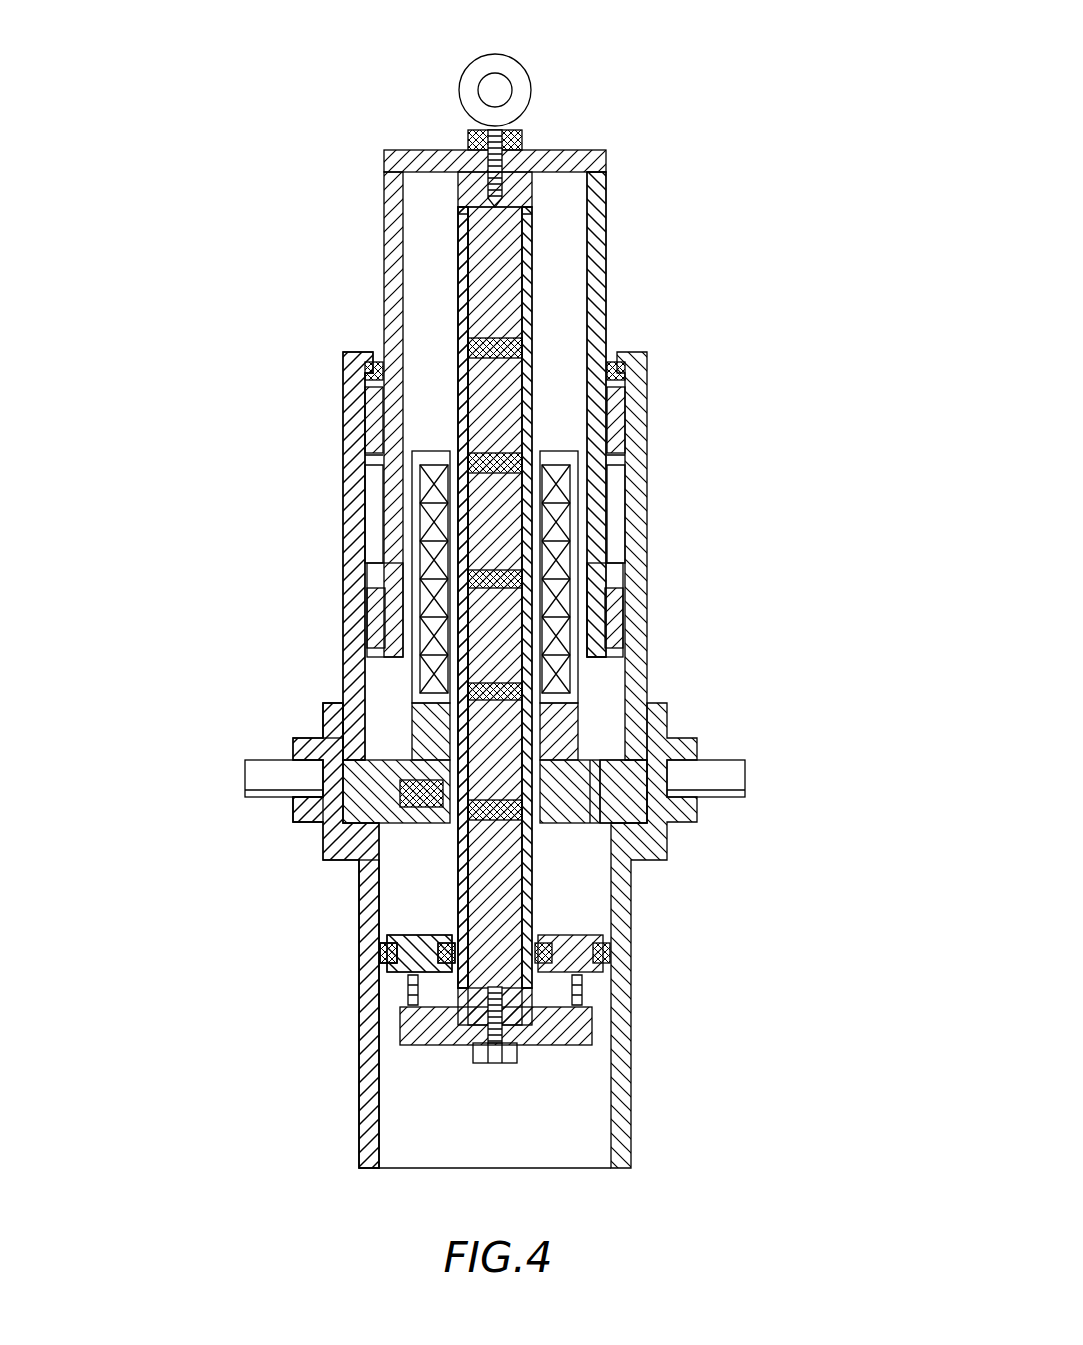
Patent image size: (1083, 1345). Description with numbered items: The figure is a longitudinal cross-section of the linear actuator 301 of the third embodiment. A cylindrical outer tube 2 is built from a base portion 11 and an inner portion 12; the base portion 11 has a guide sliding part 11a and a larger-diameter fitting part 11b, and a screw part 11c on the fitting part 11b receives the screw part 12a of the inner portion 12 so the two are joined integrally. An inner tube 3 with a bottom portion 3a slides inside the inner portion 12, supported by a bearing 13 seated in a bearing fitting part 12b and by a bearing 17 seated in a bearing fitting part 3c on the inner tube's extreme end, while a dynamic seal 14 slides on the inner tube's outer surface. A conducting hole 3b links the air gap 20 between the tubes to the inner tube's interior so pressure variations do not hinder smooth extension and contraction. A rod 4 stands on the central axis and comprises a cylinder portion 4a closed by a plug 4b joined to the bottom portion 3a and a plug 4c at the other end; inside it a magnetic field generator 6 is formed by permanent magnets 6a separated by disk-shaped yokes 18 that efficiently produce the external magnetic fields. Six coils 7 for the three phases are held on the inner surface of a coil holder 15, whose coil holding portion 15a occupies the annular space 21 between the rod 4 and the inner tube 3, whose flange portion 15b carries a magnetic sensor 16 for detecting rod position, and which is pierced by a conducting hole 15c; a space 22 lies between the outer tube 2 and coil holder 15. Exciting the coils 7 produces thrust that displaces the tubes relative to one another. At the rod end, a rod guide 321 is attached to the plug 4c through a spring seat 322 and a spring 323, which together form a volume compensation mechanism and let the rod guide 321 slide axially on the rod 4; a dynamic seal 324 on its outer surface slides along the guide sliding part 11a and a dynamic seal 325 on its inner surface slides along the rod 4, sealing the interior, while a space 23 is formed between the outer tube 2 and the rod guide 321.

The linear actuator 301 is at (688, 76).
The outer tube 2 is at (360, 1019).
The inner tube 3 is at (609, 216).
The bottom portion 3a is at (537, 150).
The conducting hole 3b is at (608, 472).
The bearing fitting part 3c is at (605, 562).
The rod 4 is at (460, 307).
The cylinder portion 4a is at (463, 266).
The plug 4b is at (530, 182).
The plug 4c is at (524, 1014).
The magnetic field generator 6 is at (538, 372).
The permanent magnets 6a is at (534, 378).
The coils 7 is at (578, 548).
The base portion 11 is at (360, 878).
The guide sliding part 11a is at (372, 1142).
The fitting part 11b is at (328, 780).
The screw part 11c is at (346, 742).
The inner portion 12 is at (343, 506).
The screw part 12a is at (316, 752).
The bearing fitting part 12b is at (368, 413).
The bearing 13 is at (642, 410).
The dynamic seal 14 is at (642, 368).
The coil holder 15 is at (590, 717).
The coil holding portion 15a is at (376, 616).
The flange portion 15b is at (674, 748).
The conducting hole 15c is at (652, 808).
The magnetic sensor 16 is at (418, 798).
The bearing 17 is at (613, 606).
The yoke 18 is at (470, 350).
The air gap 20 is at (366, 478).
The annular space 21 is at (570, 203).
The space 22 is at (638, 663).
The space 23 is at (578, 893).
The rod guide 321 is at (566, 932).
The spring seat 322 is at (410, 1037).
The spring 323 is at (410, 990).
The dynamic seal 324 is at (584, 990).
The dynamic seal 325 is at (426, 932).